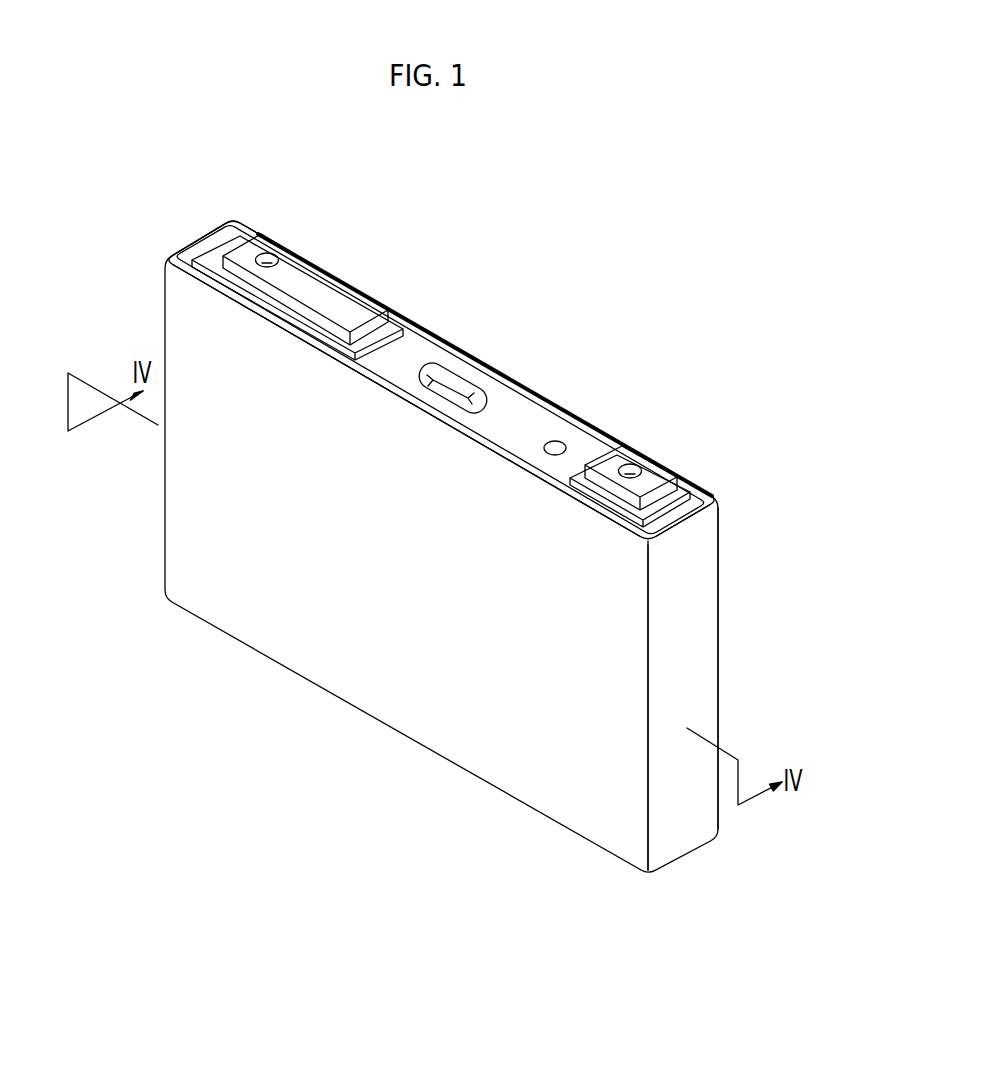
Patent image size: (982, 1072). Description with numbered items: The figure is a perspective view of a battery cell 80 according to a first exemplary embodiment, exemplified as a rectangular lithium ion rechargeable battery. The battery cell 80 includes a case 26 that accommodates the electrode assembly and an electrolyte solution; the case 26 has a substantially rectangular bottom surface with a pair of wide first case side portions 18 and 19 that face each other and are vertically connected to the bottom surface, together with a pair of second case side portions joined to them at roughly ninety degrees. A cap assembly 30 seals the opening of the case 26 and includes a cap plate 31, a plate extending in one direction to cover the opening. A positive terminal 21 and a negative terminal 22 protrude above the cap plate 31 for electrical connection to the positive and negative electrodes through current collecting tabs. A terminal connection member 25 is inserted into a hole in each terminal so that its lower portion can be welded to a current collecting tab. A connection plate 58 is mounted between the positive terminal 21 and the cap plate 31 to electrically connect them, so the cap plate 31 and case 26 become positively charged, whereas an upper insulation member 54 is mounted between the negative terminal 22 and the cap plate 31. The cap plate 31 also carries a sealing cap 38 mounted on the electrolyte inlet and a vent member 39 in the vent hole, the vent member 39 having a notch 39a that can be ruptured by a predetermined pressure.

The battery cell 80 is at (529, 177).
The case 26 is at (417, 736).
The first case side portion 18 is at (262, 641).
The first case side portion 19 is at (718, 603).
The cap plate 31 is at (417, 343).
The cap assembly 30 is at (534, 401).
The upper insulation member 54 is at (220, 252).
The connection plate 58 is at (690, 488).
The negative terminal 22 is at (338, 295).
The positive terminal 21 is at (657, 477).
The terminal connection member 25 is at (268, 254).
The vent member 39 is at (450, 373).
The notch 39a is at (460, 390).
The sealing cap 38 is at (562, 443).